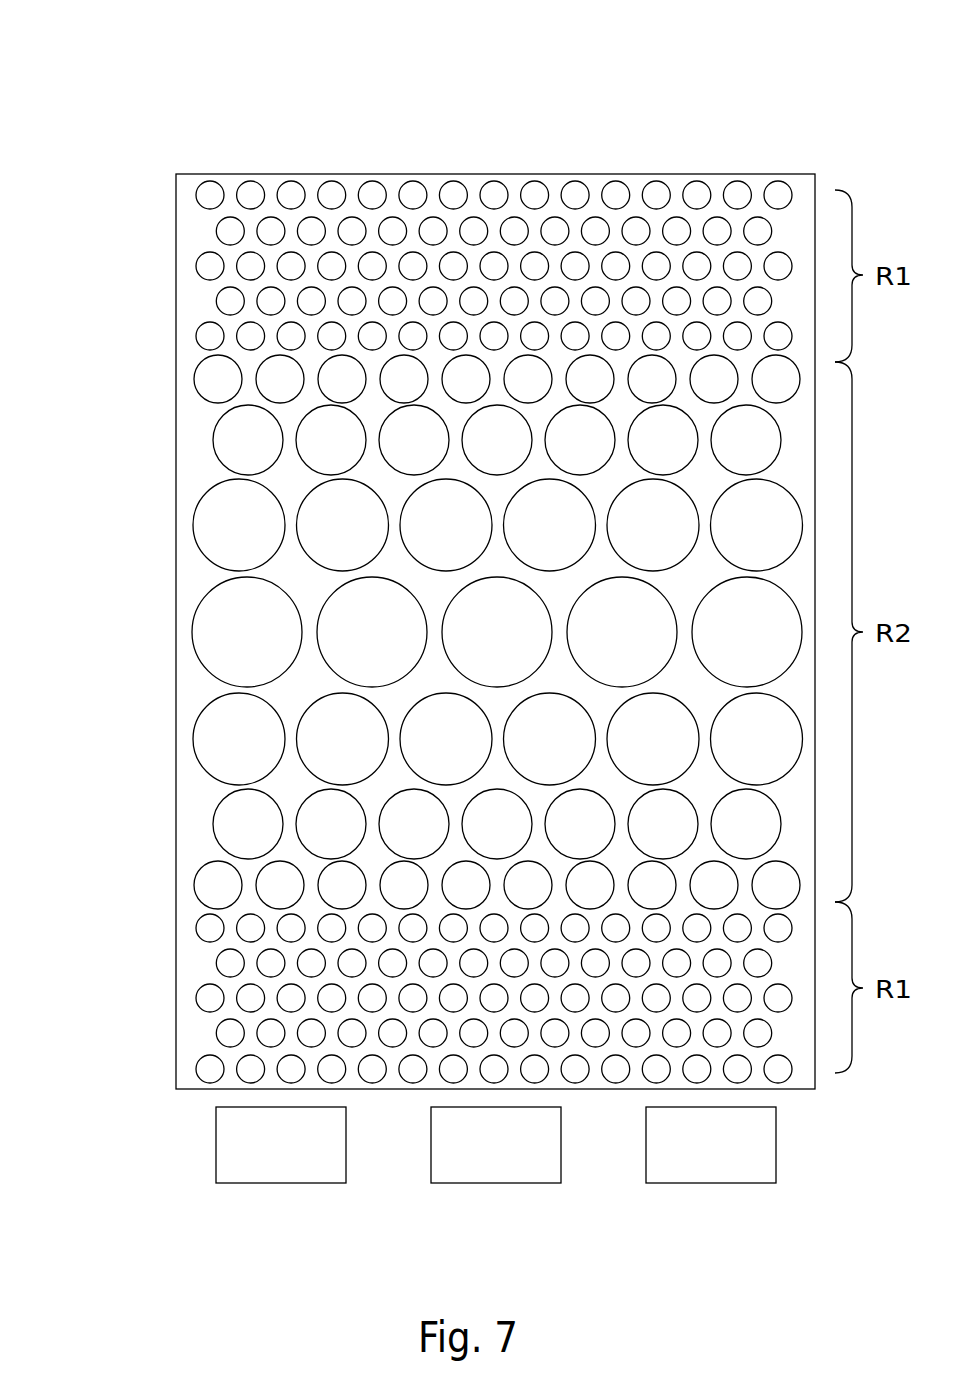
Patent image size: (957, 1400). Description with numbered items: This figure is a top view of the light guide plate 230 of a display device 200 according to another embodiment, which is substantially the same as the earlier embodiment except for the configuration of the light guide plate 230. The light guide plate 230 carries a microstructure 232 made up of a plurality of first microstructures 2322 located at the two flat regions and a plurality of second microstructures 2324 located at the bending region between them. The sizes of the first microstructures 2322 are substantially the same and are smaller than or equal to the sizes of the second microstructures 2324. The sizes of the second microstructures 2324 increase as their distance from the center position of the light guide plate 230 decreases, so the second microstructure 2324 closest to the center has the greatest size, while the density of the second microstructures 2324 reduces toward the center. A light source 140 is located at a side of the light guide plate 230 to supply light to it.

The display device 200 is at (120, 28).
The light guide plate 230 is at (190, 186).
The microstructure 232 is at (93, 308).
The first microstructures 2322 is at (208, 333).
The second microstructures 2324 is at (208, 629).
The light source 140 is at (280, 1175).